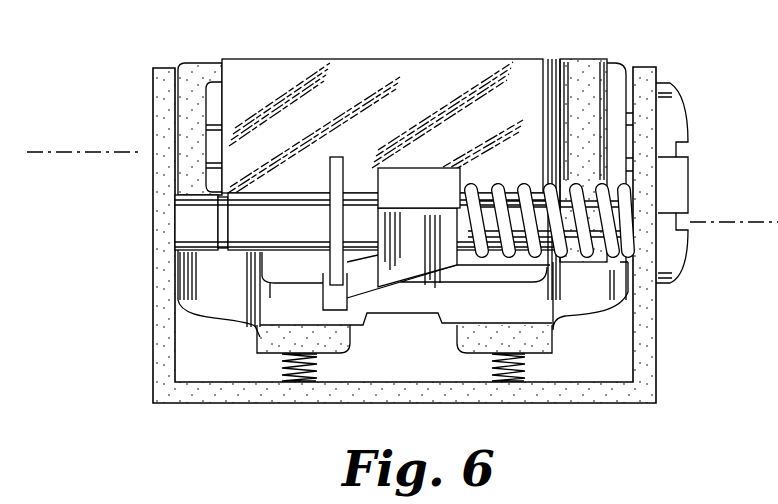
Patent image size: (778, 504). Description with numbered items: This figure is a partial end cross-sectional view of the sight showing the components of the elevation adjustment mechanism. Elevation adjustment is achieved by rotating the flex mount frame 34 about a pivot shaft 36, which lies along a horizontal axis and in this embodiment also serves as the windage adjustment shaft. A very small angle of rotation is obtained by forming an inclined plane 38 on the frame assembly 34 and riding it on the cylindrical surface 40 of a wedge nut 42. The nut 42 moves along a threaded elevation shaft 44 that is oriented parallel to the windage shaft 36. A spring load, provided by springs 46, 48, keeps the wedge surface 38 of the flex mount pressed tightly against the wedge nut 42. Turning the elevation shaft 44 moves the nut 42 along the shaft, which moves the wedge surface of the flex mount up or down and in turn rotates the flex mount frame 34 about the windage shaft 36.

The flex mount frame 34 is at (200, 75).
The pivot shaft 36 is at (210, 137).
The inclined plane 38 is at (358, 275).
The cylindrical surface 40 is at (400, 283).
The wedge nut 42 is at (431, 199).
The threaded elevation shaft 44 is at (192, 223).
The spring 46 is at (277, 370).
The spring 48 is at (523, 370).